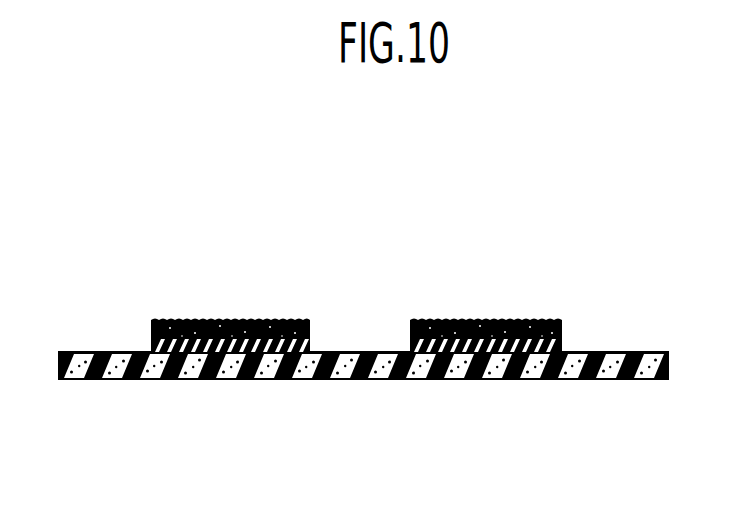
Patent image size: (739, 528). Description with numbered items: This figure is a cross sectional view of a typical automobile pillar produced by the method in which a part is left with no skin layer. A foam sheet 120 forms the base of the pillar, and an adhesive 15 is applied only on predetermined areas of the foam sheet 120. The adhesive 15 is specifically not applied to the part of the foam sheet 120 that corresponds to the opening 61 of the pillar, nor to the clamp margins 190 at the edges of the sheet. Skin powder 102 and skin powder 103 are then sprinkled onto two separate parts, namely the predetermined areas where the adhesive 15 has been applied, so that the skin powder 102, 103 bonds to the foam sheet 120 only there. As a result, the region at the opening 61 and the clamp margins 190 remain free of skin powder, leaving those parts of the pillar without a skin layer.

The adhesive 15 is at (151, 340).
The opening 61 is at (361, 295).
The skin powder 102 is at (238, 318).
The skin powder 103 is at (490, 320).
The foam sheet 120 is at (650, 380).
The clamp margins 190 is at (113, 380).